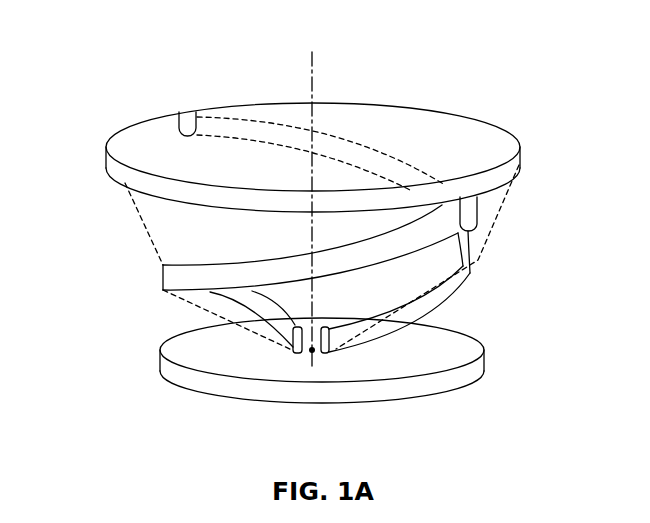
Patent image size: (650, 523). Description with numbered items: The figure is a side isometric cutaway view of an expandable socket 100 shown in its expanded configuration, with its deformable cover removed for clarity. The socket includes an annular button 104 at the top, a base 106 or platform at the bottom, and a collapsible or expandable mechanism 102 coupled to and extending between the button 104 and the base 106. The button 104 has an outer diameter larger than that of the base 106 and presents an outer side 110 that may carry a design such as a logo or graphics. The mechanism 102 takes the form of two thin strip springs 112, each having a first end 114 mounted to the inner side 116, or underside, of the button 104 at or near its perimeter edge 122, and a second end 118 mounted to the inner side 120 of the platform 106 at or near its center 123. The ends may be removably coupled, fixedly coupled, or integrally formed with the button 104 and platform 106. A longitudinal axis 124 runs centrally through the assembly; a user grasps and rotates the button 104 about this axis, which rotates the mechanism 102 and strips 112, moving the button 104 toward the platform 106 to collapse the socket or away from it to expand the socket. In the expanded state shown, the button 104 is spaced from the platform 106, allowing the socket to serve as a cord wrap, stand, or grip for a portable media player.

The expandable socket 100 is at (346, 80).
The collapsible or expandable mechanism 102 is at (338, 258).
The button 104 is at (276, 139).
The base 106 is at (356, 385).
The outer side 110 is at (418, 122).
The strip springs 112 is at (205, 283).
The first end 114 is at (182, 118).
The inner side 116 is at (122, 180).
The second end 118 is at (293, 352).
The inner side 120 is at (410, 363).
The perimeter edge 122 is at (117, 165).
The center 123 is at (314, 342).
The longitudinal axis 124 is at (309, 67).